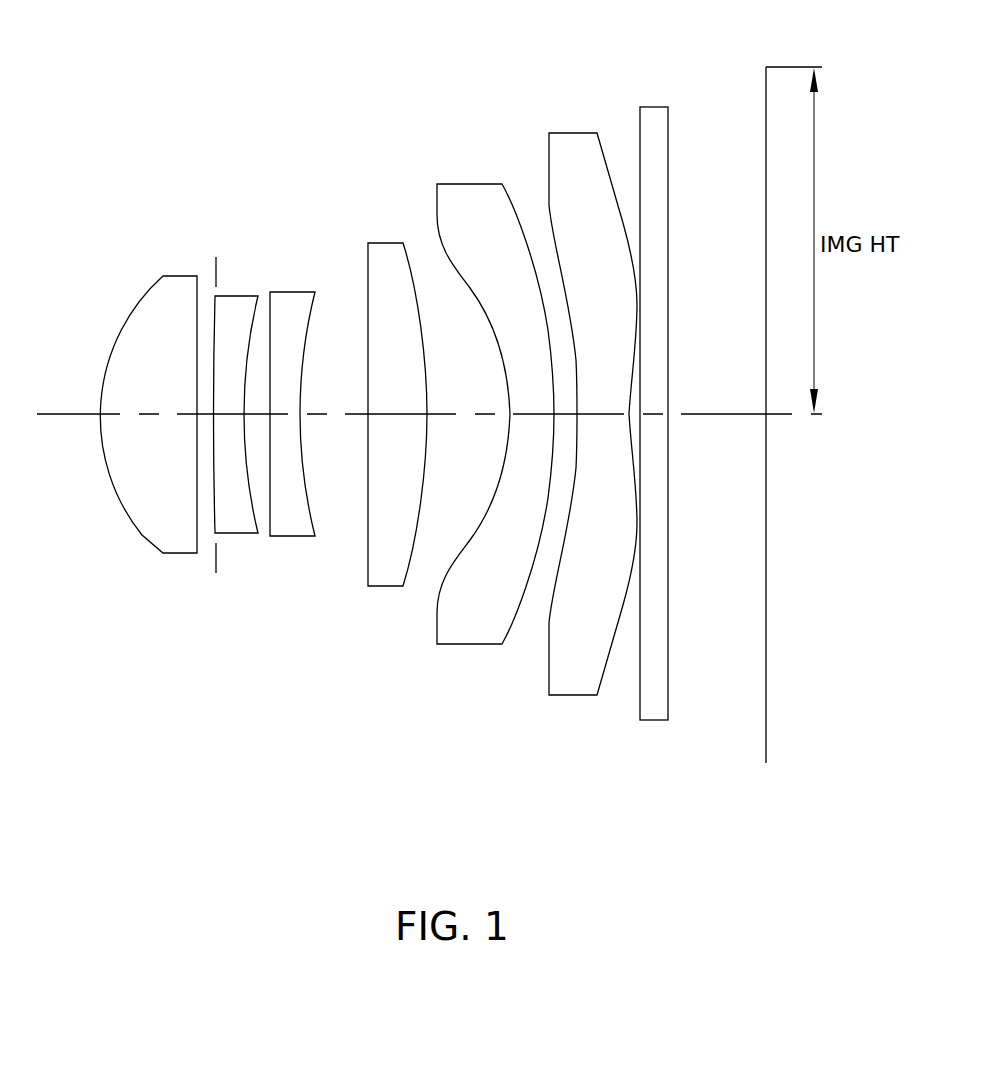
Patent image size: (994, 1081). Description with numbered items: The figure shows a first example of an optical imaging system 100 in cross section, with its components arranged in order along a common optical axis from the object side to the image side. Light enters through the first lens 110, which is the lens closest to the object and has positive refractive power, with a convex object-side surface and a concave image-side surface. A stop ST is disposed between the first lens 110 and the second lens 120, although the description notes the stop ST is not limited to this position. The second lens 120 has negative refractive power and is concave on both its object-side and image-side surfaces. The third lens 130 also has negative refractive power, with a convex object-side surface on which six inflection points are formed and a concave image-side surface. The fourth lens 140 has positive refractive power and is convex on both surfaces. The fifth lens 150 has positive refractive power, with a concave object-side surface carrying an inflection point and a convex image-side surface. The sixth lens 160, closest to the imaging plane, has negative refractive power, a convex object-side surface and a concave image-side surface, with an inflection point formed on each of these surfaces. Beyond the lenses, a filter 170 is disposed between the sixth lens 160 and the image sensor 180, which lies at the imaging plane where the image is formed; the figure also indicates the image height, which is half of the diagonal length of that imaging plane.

The optical imaging system 100 is at (429, 415).
The first lens 110 is at (135, 533).
The second lens 120 is at (237, 535).
The third lens 130 is at (290, 538).
The fourth lens 140 is at (381, 588).
The fifth lens 150 is at (467, 646).
The sixth lens 160 is at (574, 697).
The filter 170 is at (655, 722).
The image sensor 180 is at (767, 708).
The stop ST is at (215, 270).